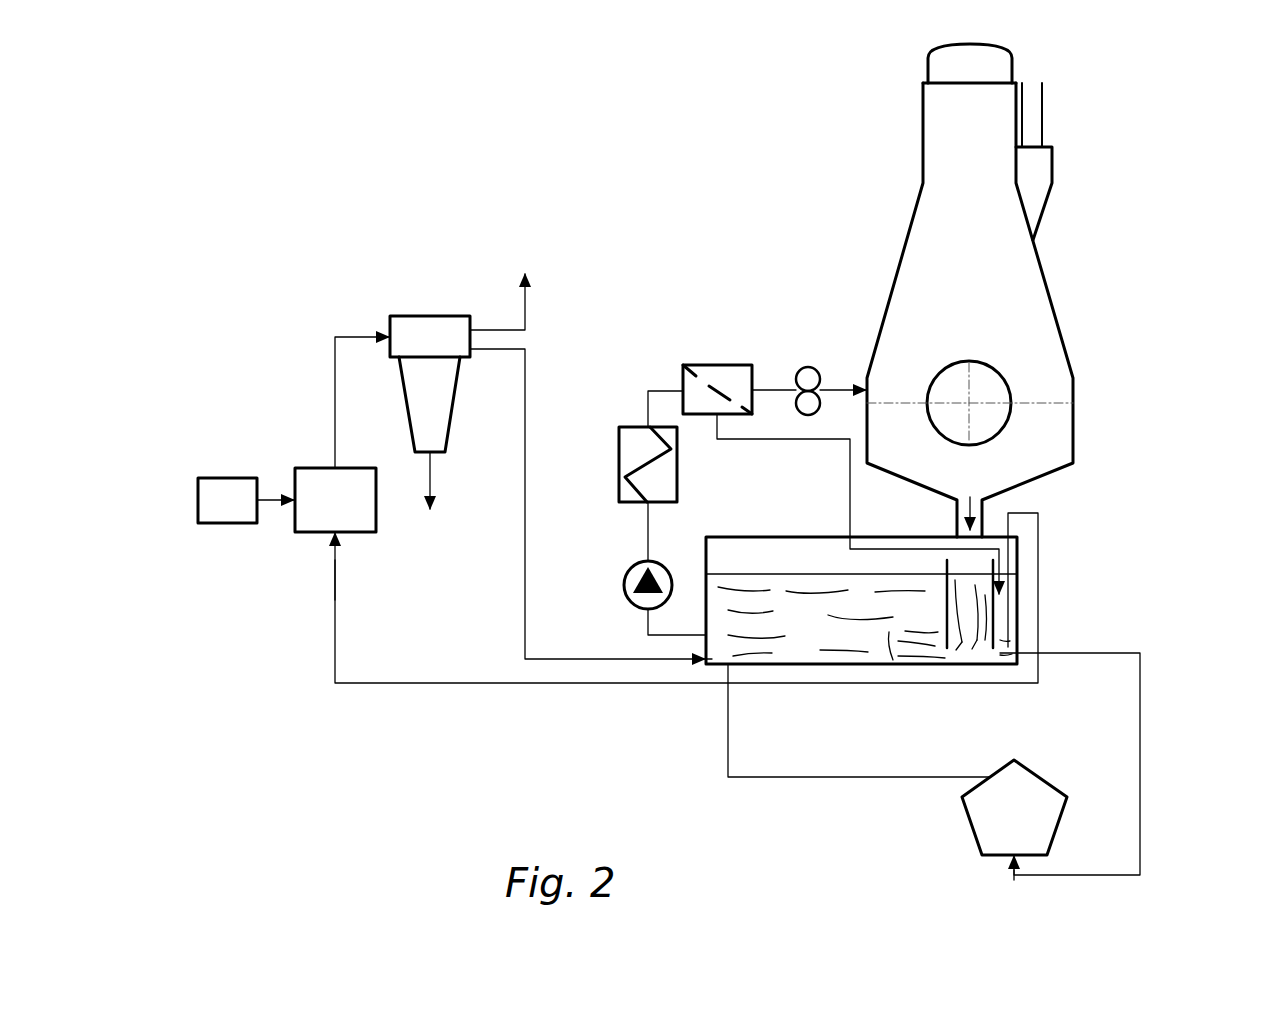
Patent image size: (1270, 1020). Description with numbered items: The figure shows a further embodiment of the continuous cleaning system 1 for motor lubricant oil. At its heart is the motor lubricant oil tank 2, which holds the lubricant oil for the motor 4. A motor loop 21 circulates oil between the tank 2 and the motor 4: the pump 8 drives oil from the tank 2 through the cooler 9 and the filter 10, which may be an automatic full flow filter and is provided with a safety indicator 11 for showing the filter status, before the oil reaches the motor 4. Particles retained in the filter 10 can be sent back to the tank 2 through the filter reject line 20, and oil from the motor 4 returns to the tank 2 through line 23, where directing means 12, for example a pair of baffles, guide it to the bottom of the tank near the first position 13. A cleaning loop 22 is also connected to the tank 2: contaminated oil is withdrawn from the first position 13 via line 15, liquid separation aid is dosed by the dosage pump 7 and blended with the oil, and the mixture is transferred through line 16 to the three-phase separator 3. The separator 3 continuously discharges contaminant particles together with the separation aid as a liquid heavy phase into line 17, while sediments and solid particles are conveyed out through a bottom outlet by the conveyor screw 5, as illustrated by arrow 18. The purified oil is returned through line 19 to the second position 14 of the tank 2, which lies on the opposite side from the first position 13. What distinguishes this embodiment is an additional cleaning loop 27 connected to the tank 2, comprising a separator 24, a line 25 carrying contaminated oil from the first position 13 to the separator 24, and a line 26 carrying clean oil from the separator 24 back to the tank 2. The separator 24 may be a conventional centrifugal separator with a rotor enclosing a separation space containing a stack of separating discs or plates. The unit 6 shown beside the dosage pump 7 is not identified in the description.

The continuous cleaning system 1 is at (292, 207).
The motor lubricant oil tank 2 is at (895, 632).
The three-phase separator 3 is at (413, 321).
The motor 4 is at (1036, 309).
The conveyor screw 5 is at (418, 391).
The mixing unit 6 is at (312, 523).
The dosage pump 7 is at (209, 508).
The pump 8 is at (622, 567).
The cooler 9 is at (632, 453).
The filter 10 is at (708, 374).
The safety indicator 11 is at (810, 374).
The directing means 12 is at (997, 613).
The first position 13 is at (1000, 656).
The second position 14 is at (718, 645).
The line 15 is at (350, 575).
The line 16 is at (362, 390).
The line 17 is at (508, 286).
The arrow 18 is at (427, 492).
The line 19 is at (525, 425).
The filter reject line 20 is at (849, 455).
The motor loop 21 is at (655, 381).
The cleaning loop 22 is at (395, 692).
The line 23 is at (980, 506).
The separator 24 is at (982, 815).
The line 25 is at (1025, 879).
The line 26 is at (858, 720).
The additional cleaning loop 27 is at (1157, 762).